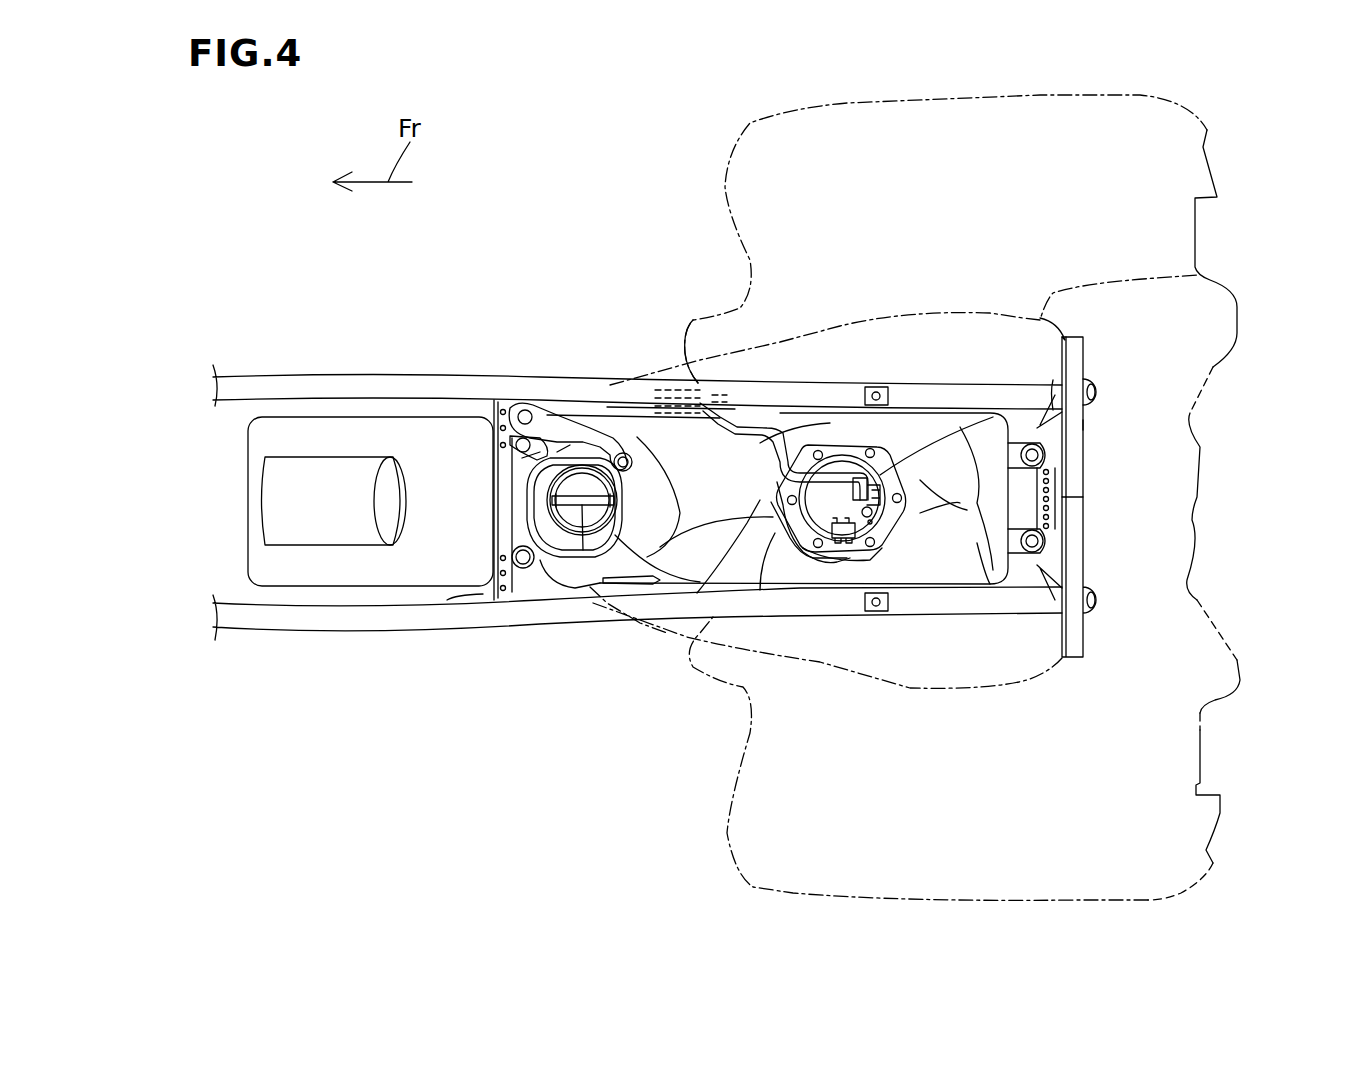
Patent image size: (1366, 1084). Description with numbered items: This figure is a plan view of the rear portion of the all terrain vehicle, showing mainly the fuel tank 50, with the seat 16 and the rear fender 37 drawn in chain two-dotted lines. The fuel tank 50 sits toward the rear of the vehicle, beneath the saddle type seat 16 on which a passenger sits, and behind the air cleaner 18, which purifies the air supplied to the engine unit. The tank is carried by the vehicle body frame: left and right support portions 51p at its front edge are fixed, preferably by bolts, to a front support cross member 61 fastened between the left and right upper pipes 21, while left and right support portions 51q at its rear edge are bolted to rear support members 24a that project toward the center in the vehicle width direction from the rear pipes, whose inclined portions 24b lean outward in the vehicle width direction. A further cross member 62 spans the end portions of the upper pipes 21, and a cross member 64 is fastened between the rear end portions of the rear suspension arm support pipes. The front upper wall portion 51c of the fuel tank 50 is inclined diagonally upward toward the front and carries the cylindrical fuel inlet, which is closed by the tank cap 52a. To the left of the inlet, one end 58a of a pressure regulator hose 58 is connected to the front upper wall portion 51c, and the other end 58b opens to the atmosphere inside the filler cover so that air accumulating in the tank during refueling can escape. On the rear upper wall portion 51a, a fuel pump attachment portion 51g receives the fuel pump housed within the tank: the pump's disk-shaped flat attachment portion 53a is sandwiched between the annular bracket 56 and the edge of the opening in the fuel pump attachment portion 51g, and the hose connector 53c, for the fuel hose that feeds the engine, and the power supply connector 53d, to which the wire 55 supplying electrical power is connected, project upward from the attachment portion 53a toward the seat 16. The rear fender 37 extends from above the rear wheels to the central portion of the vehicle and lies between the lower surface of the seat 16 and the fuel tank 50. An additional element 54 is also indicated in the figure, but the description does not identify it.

The seat 16 is at (1197, 275).
The air cleaner 18 is at (343, 418).
The upper pipes 21 is at (334, 633).
The rear support members 24a is at (1050, 553).
The inclined portions 24b is at (1053, 573).
The rear fender 37 is at (1197, 233).
The fuel tank 50 is at (935, 608).
The rear upper wall portion 51a is at (977, 555).
The front upper wall portion 51c is at (627, 533).
The fuel pump attachment portion 51g is at (874, 560).
The support portions 51p is at (497, 410).
The support portions 51q is at (1050, 527).
The tank cap 52a is at (580, 555).
The attachment portion 53a is at (840, 522).
The hose connector 53c is at (1057, 427).
The power supply connector 53d is at (828, 465).
The fuel supply pipe 54 is at (800, 412).
The wire 55 is at (693, 600).
The bracket 56 is at (787, 557).
The pressure regulator hose 58 is at (590, 425).
The one end of pressure regulator hose 58a is at (630, 455).
The other end of pressure regulator hose 58b is at (535, 400).
The front support cross member 61 is at (456, 601).
The cross member 62 is at (1083, 355).
The cross member 64 is at (1057, 487).